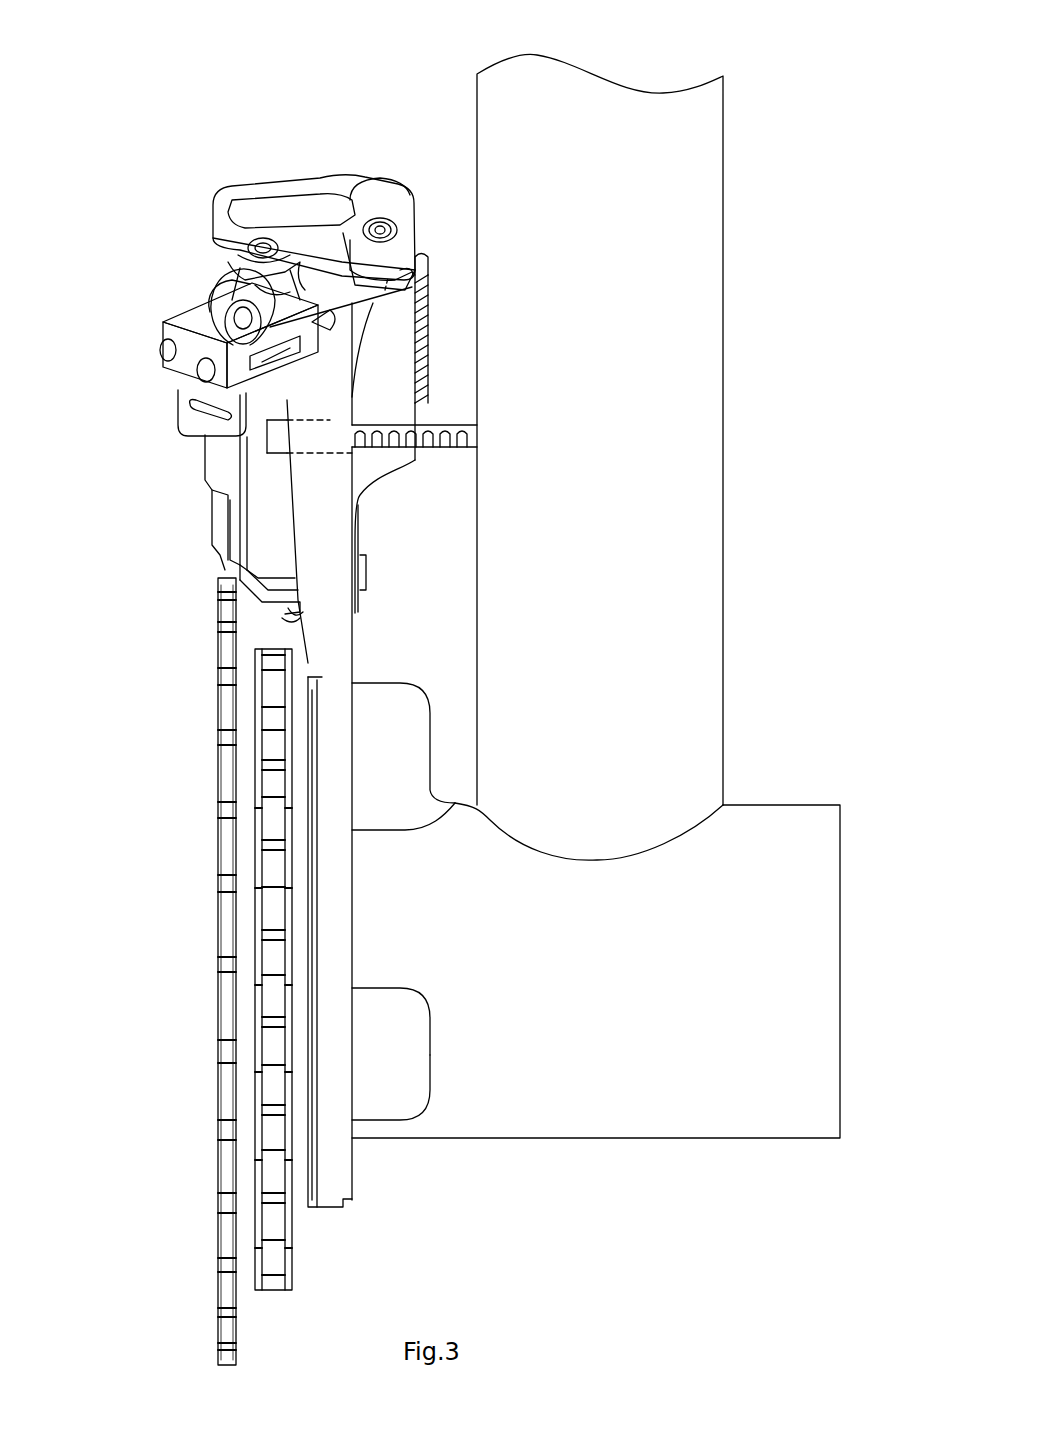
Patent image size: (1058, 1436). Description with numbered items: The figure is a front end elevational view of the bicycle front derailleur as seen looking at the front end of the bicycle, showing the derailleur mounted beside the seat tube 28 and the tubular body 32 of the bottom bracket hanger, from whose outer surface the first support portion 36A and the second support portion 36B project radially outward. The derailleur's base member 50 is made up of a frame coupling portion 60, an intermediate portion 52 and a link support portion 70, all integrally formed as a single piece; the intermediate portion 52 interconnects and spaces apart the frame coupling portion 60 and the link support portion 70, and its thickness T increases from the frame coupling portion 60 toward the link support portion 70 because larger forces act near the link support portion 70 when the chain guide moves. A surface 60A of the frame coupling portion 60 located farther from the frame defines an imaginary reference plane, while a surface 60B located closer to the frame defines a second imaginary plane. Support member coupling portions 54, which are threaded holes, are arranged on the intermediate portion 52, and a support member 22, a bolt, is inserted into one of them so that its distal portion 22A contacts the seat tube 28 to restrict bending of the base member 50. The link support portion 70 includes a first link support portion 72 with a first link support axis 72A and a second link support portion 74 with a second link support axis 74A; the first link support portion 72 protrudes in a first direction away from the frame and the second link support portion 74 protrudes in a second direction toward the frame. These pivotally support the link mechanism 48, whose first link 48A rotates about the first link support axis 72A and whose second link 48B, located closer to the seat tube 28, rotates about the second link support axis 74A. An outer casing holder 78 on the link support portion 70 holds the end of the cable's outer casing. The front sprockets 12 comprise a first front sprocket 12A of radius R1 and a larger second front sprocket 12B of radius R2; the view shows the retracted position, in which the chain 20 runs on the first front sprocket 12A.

The front sprockets 12 is at (166, 971).
The first front sprocket 12A is at (255, 1243).
The second front sprocket 12B is at (220, 1323).
The chain 20 is at (293, 1276).
The support member 22 is at (452, 456).
The distal portion 22A is at (478, 436).
The seat tube 28 is at (724, 182).
The body 32 is at (792, 805).
The first support portion 36A is at (407, 683).
The second support portion 36B is at (428, 1120).
The link mechanism 48 is at (272, 194).
The first link 48A is at (230, 253).
The second link 48B is at (380, 215).
The base member 50 is at (413, 755).
The intermediate portion 52 is at (330, 556).
The support member coupling portions 54 is at (322, 452).
The frame coupling portion 60 is at (465, 1054).
The surface 60A is at (310, 1005).
The surface 60B is at (352, 1045).
The link support portion 70 is at (337, 352).
The first link support portion 72 is at (286, 285).
The first link support axis 72A is at (290, 288).
The second link support portion 74 is at (408, 262).
The second link support axis 74A is at (390, 292).
The outer casing holder 78 is at (204, 283).